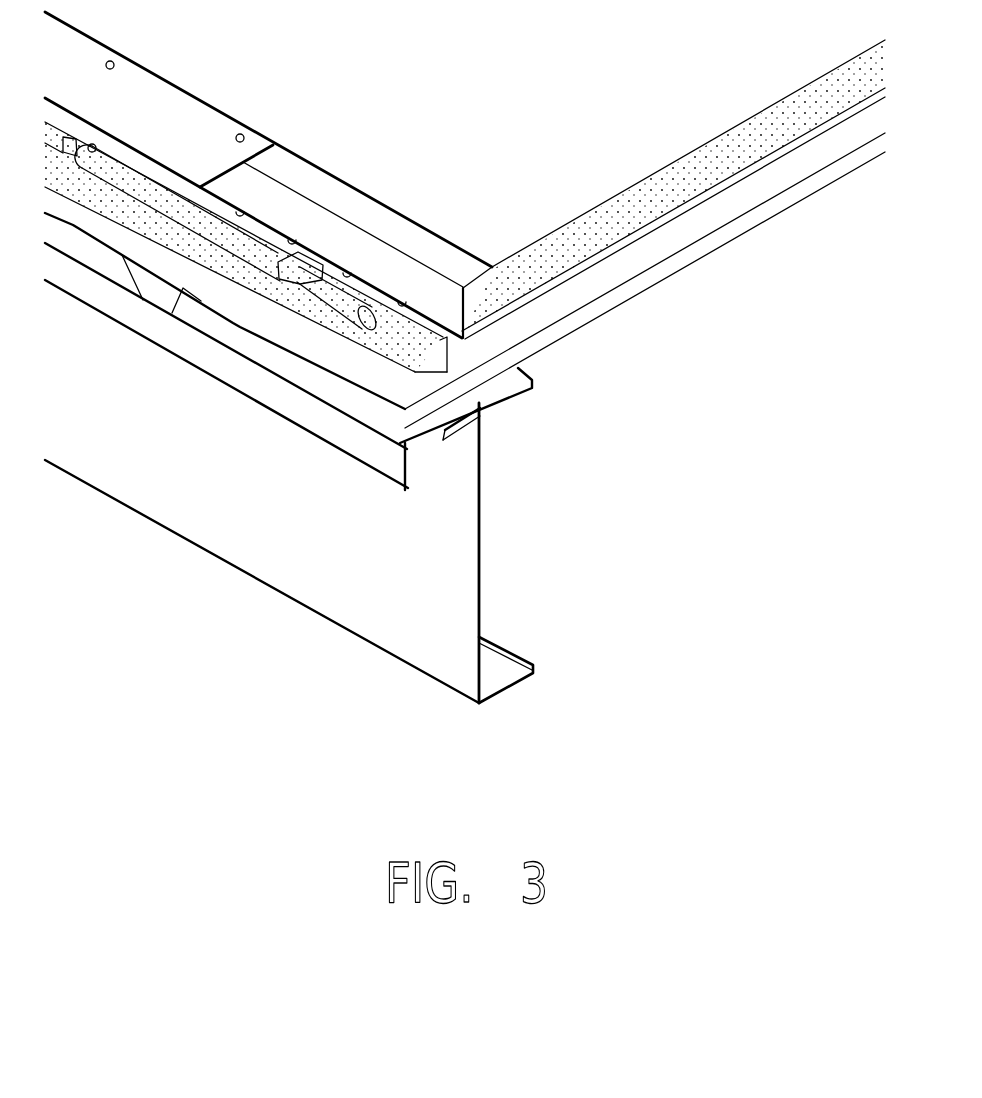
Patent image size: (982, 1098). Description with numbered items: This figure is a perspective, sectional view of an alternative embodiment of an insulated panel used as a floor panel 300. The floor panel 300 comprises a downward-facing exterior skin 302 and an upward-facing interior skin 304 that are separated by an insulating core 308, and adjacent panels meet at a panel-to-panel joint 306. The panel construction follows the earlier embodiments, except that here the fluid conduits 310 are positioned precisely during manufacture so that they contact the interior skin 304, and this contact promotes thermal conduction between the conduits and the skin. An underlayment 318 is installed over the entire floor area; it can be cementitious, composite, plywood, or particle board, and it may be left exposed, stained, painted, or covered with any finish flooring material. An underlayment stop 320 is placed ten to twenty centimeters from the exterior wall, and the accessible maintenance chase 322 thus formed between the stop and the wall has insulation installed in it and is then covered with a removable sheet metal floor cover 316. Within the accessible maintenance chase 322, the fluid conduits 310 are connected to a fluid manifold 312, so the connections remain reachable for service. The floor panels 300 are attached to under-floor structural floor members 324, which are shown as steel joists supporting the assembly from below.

The floor panel 300 is at (815, 239).
The exterior skin 302 is at (465, 206).
The interior skin 304 is at (465, 253).
The panel-to-panel joint 306 is at (465, 300).
The insulating core 308 is at (129, 415).
The fluid conduits 310 is at (292, 209).
The fluid manifold 312 is at (277, 151).
The removable sheet metal floor cover 316 is at (307, 100).
The cementitious underlayment 318 is at (463, 226).
The underlayment stop 320 is at (463, 385).
The accessible maintenance chase 322 is at (252, 491).
The structural floor members 324 is at (289, 553).